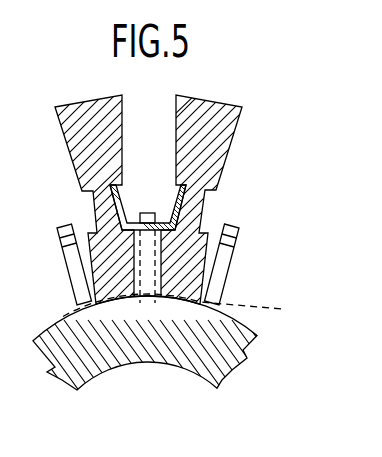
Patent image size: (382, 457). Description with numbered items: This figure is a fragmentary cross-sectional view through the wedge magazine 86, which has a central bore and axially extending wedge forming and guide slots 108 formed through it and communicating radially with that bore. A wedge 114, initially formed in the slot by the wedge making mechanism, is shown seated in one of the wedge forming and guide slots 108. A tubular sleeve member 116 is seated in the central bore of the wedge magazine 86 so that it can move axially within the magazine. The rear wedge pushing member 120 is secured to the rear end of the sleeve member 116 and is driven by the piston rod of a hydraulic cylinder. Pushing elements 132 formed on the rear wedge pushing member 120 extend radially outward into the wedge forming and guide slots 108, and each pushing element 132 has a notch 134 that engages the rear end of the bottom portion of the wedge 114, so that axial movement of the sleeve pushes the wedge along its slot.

The wedge magazine 86 is at (230, 93).
The wedge forming and guide slots 108 is at (145, 150).
The wedge 114 is at (132, 200).
The tubular sleeve member 116 is at (200, 347).
The rear wedge pushing member 120 is at (190, 311).
The pushing element 132 is at (228, 278).
The notch 134 is at (233, 243).